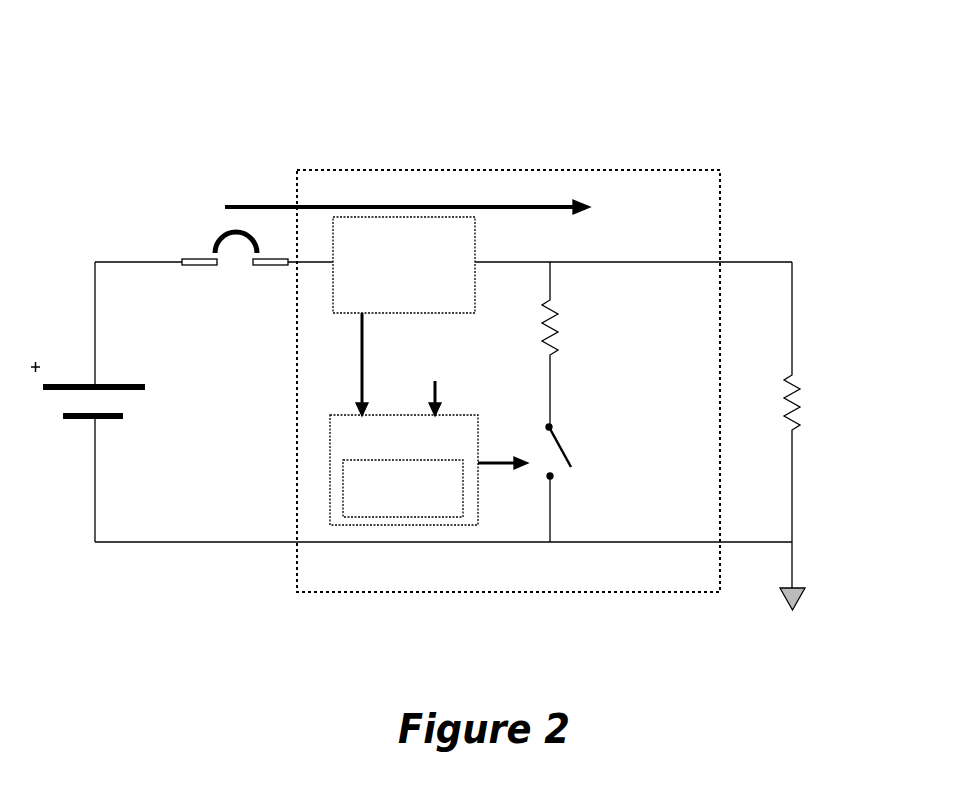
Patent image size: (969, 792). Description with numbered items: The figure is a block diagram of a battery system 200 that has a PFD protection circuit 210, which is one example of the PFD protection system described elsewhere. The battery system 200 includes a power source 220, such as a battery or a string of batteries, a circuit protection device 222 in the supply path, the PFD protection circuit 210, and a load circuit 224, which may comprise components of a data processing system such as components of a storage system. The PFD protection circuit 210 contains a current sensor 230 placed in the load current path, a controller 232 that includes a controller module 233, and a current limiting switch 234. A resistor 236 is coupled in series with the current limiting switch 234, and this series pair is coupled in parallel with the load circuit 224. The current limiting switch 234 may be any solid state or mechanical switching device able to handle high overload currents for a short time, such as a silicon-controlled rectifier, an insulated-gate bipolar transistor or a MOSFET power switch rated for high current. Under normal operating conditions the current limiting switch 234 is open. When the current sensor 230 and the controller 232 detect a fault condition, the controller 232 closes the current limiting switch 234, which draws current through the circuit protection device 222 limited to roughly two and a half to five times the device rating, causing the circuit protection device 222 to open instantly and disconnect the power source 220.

The battery system 200 is at (146, 68).
The PFD protection circuit 210 is at (508, 381).
The power source 220 is at (78, 432).
The circuit protection device 222 is at (215, 237).
The load circuit 224 is at (828, 436).
The current sensor 230 is at (404, 316).
The controller 232 is at (429, 440).
The controller module 233 is at (403, 488).
The current limiting switch 234 is at (611, 458).
The resistor 236 is at (576, 343).